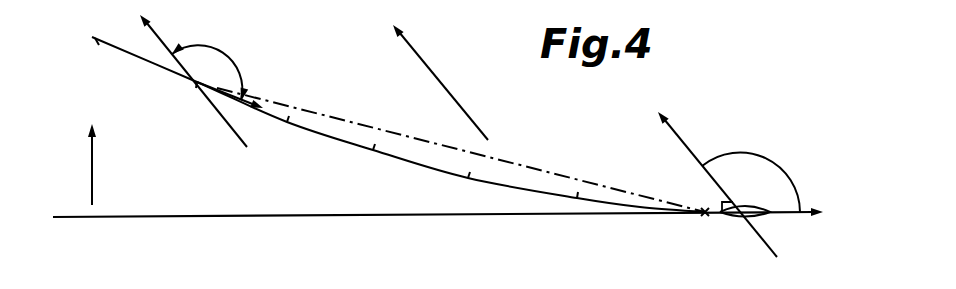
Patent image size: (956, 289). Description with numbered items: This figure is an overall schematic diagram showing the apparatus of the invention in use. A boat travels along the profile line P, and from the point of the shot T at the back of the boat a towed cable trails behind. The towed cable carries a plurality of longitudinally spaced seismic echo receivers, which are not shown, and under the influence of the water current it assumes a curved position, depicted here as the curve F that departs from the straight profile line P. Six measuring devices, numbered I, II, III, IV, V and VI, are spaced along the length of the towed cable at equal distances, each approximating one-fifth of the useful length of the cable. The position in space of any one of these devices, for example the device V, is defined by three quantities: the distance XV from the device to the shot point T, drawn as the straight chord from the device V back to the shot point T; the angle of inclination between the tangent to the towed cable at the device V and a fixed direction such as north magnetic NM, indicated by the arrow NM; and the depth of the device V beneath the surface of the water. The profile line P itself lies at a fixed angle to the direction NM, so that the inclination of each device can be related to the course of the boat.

The profile line P is at (438, 204).
The flank curve (profile) F is at (398, 124).
The distance from device V to shot point T XV is at (461, 150).
The north magnetic NM is at (440, 82).
The measuring device VI is at (95, 60).
The measuring device V is at (185, 100).
The measuring device IV is at (284, 134).
The measuring device III is at (359, 161).
The measuring device II is at (451, 187).
The measuring device I is at (558, 203).
The point of the shot T is at (717, 184).